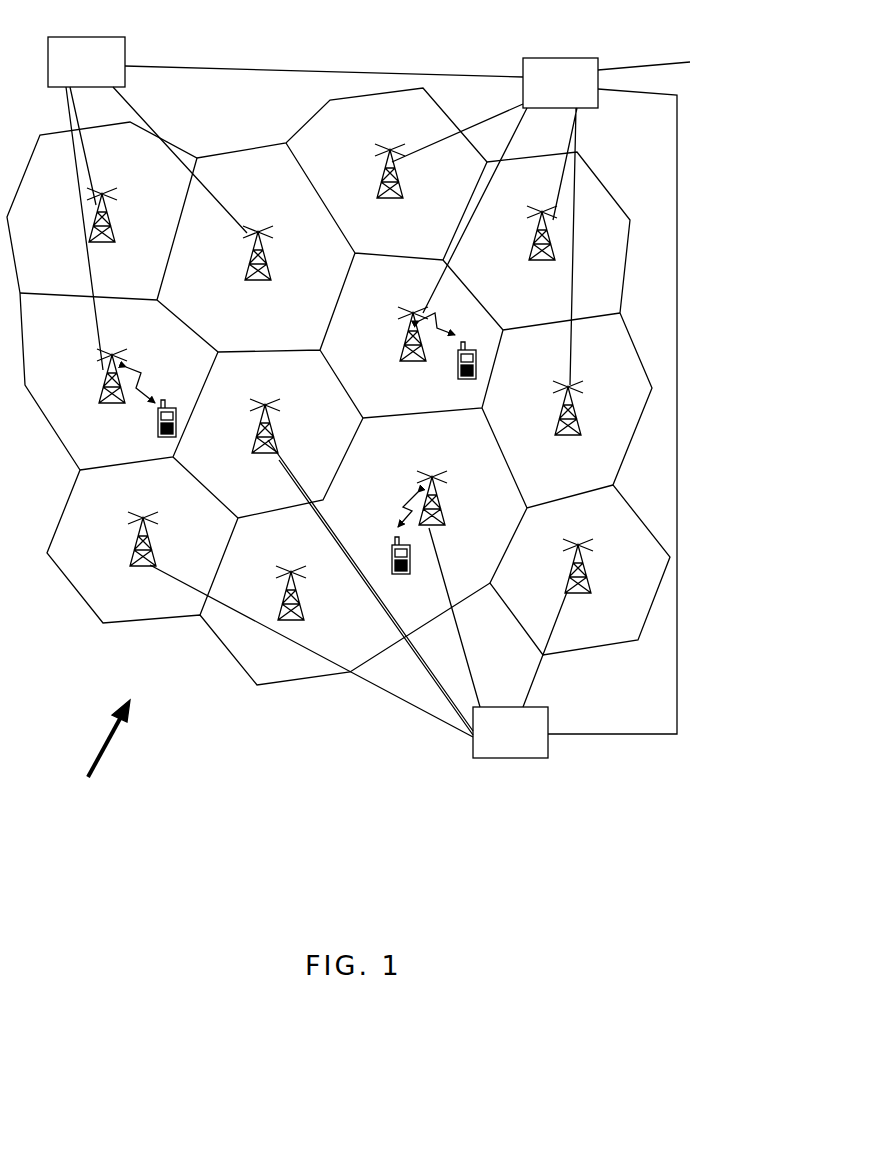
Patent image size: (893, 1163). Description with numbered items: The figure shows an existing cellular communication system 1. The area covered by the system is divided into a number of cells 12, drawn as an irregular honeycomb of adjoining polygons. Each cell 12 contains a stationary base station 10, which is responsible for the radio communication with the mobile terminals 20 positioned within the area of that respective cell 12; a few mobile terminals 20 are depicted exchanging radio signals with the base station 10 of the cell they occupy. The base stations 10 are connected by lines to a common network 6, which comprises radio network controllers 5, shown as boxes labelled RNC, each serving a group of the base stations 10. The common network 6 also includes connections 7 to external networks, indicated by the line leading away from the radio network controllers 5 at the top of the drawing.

The cellular communication system 1 is at (103, 755).
The radio network controller 5 is at (122, 73).
The common network 6 is at (322, 71).
The connections to external networks 7 is at (645, 64).
The base station 10 is at (112, 213).
The cell 12 is at (643, 578).
The mobile terminal 20 is at (162, 405).